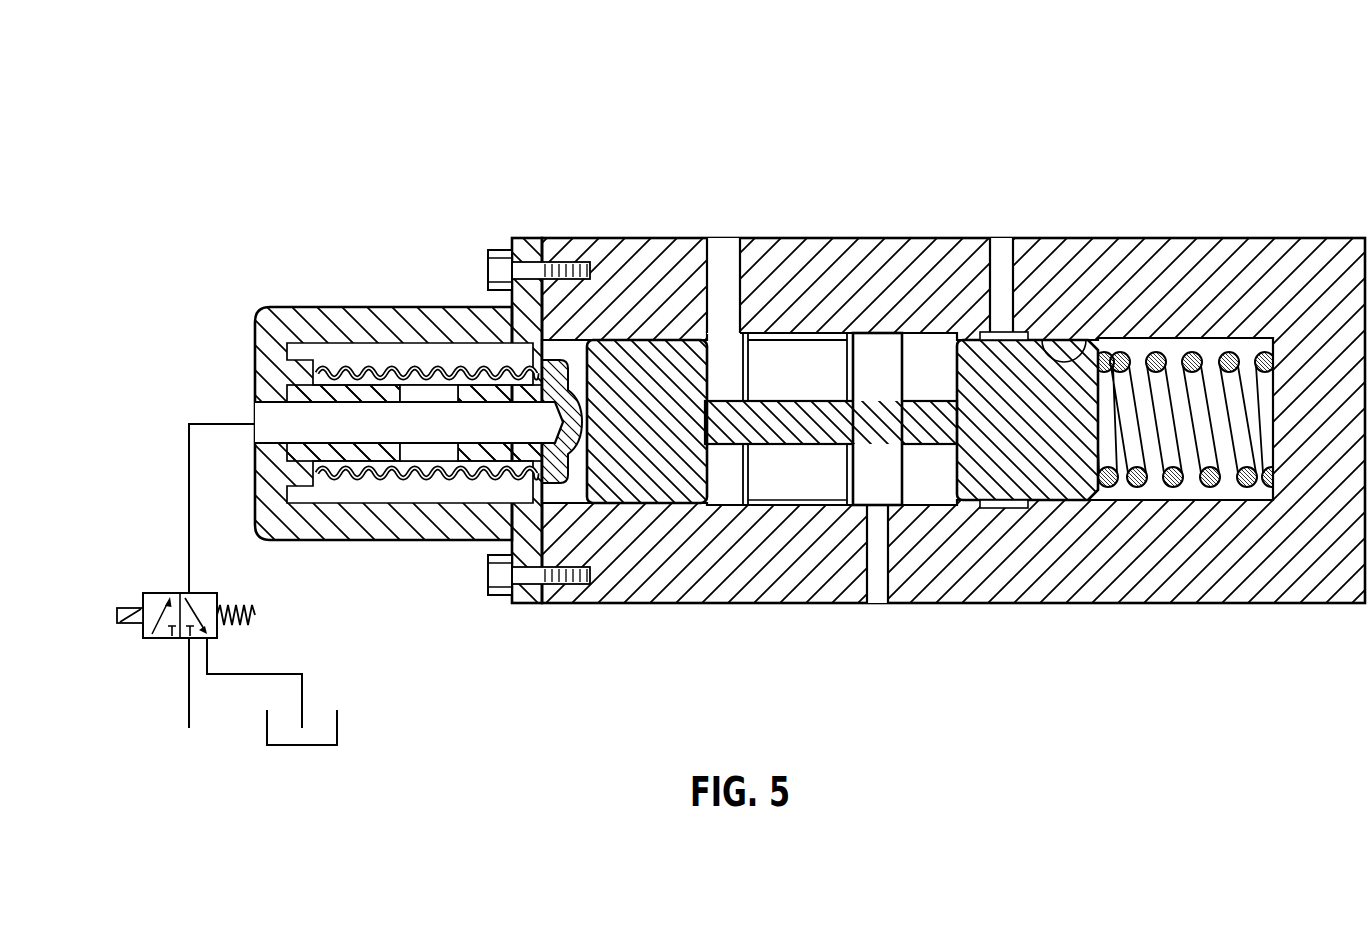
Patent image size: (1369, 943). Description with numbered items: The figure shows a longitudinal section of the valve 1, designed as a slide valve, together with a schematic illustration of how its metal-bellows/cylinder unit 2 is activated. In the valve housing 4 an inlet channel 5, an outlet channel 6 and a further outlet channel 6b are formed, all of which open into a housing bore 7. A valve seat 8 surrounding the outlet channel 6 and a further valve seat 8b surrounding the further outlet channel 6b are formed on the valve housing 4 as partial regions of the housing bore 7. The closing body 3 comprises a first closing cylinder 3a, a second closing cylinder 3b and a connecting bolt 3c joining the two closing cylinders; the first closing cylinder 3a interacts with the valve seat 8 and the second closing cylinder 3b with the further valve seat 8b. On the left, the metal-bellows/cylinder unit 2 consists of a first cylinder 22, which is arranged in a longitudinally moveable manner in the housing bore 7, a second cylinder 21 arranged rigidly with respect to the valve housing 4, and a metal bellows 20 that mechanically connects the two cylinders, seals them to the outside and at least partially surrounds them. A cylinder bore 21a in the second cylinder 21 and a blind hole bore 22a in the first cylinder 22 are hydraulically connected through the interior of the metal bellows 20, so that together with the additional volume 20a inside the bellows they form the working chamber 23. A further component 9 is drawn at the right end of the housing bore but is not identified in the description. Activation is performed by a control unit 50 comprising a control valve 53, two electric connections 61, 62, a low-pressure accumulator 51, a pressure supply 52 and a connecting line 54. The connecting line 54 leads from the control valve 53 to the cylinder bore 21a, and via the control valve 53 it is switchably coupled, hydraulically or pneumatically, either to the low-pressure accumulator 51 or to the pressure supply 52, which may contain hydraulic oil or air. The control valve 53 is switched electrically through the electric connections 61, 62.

The valve 1 is at (298, 116).
The metal-bellows/cylinder unit 2 is at (414, 495).
The closing body 3 is at (779, 385).
The first closing cylinder 3a is at (634, 393).
The second closing cylinder 3b is at (1000, 385).
The connecting bolt 3c is at (812, 420).
The valve housing 4 is at (1240, 292).
The inlet channel 5 is at (877, 580).
The outlet channel 6 is at (722, 300).
The further outlet channel 6b is at (1005, 262).
The housing bore 7 is at (820, 492).
The valve seat 8 is at (655, 493).
The further valve seat 8b is at (1087, 340).
The return spring 9 is at (1150, 358).
The metal bellows 20 is at (420, 412).
The additional volume 20a is at (412, 377).
The second cylinder 21 is at (282, 382).
The cylinder bore 21a is at (270, 415).
The first cylinder 22 is at (490, 453).
The blind hole bore 22a is at (498, 422).
The working chamber 23 is at (352, 423).
The control unit 50 is at (224, 667).
The low-pressure accumulator 51 is at (318, 730).
The pressure supply 52 is at (192, 712).
The control valve 53 is at (208, 600).
The connecting line 54 is at (189, 452).
The electric connection 61 is at (135, 605).
The electric connection 62 is at (125, 625).